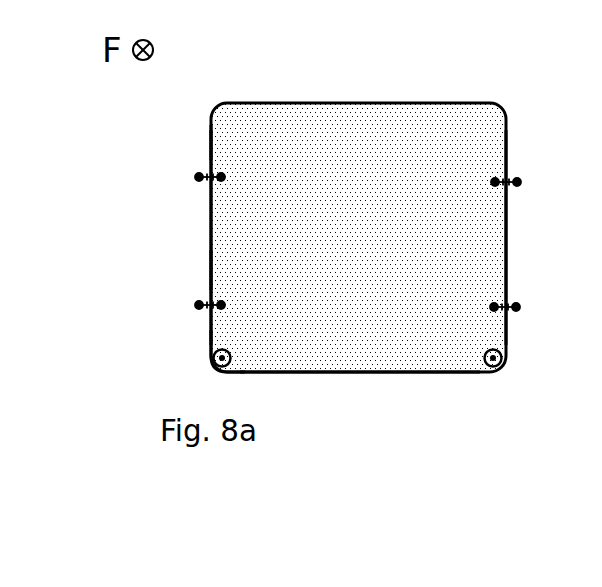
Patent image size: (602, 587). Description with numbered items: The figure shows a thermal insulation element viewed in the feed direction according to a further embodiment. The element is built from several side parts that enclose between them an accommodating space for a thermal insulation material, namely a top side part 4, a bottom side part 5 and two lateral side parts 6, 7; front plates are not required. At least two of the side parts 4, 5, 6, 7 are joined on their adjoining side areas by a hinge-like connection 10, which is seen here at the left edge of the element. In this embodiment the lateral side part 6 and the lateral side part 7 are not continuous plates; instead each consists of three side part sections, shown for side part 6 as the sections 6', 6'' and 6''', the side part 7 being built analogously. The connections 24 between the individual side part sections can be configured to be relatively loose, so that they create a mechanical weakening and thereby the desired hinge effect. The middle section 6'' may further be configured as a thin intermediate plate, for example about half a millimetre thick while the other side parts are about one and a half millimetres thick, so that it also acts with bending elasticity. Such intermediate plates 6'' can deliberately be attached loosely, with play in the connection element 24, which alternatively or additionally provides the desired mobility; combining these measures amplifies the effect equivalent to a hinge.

The side part 4 is at (445, 103).
The side part 5 is at (298, 373).
The side part 6 is at (167, 237).
The side part section 6' is at (180, 127).
The side part section 6'' is at (169, 271).
The side part section 6''' is at (178, 360).
The side part 7 is at (539, 230).
The hinge-like connection 10 is at (172, 177).
The connection element 24 is at (520, 173).